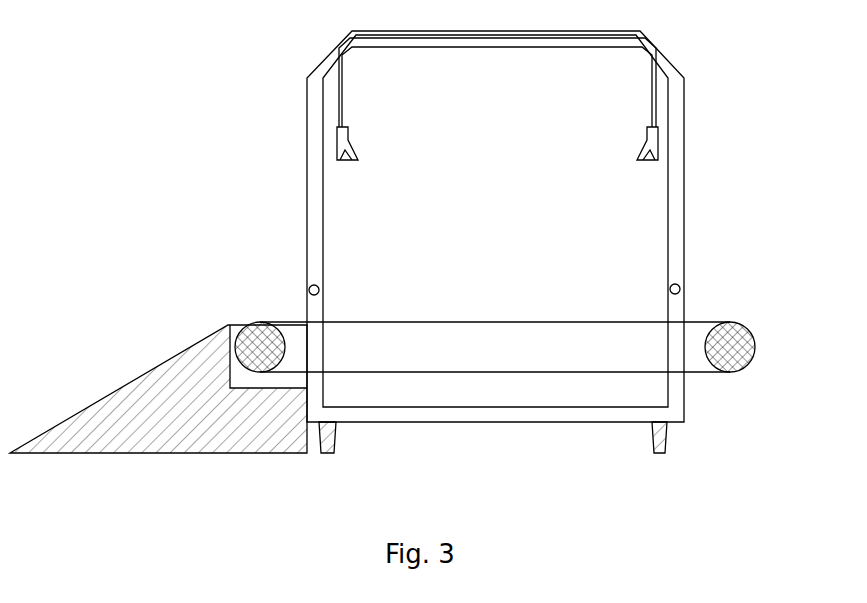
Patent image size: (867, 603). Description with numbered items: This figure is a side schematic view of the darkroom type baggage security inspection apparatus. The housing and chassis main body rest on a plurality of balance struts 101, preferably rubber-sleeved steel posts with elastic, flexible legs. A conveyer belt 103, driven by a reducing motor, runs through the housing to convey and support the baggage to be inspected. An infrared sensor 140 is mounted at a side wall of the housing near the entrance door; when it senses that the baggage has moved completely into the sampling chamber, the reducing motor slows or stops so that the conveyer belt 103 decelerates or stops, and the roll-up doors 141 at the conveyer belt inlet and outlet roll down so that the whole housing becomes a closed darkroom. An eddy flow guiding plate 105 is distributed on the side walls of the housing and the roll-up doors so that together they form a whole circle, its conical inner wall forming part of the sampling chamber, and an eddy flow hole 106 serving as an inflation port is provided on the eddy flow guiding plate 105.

The balance strut 101 is at (652, 428).
The conveyer belt 103 is at (700, 371).
The eddy flow guiding plate 105 is at (339, 162).
The eddy flow hole 106 is at (640, 162).
The infrared sensor 140 is at (670, 292).
The roll-up door 141 is at (652, 101).